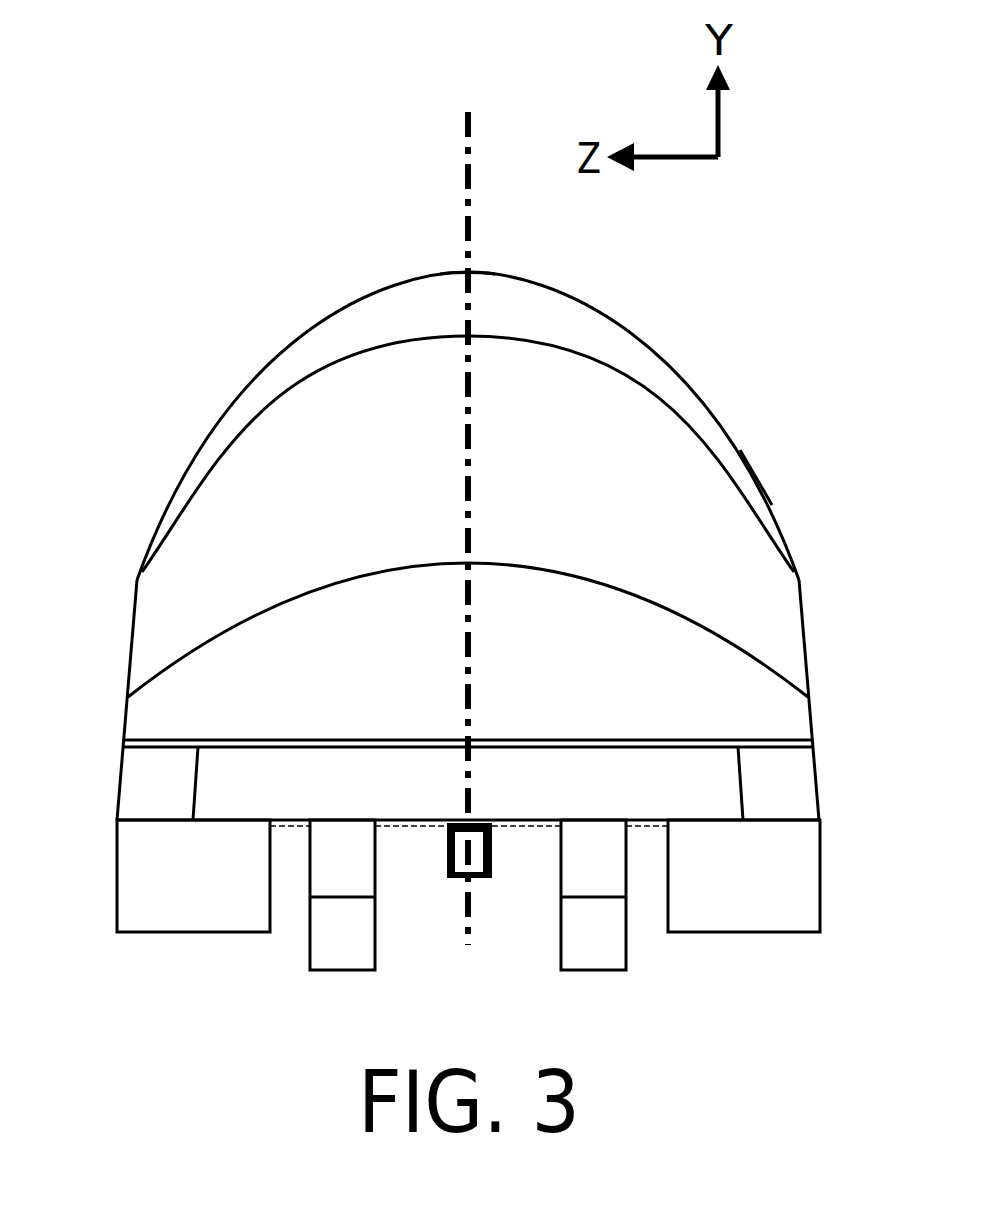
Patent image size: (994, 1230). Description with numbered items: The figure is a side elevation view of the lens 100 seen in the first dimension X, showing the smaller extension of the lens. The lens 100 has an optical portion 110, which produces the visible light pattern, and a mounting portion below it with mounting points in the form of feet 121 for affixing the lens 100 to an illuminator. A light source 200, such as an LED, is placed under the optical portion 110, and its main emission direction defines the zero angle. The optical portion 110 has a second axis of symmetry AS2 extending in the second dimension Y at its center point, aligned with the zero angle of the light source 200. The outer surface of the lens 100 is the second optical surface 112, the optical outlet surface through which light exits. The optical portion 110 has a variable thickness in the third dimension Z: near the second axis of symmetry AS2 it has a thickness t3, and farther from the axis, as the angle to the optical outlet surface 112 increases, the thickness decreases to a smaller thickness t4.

The lens 100 is at (434, 560).
The optical portion 110 is at (355, 335).
The second optical surface 112 is at (675, 360).
The feet 121 is at (198, 905).
The light source 200 is at (457, 857).
The second axis of symmetry AS2 is at (473, 500).
The thickness t3 is at (513, 268).
The thickness t4 is at (757, 475).